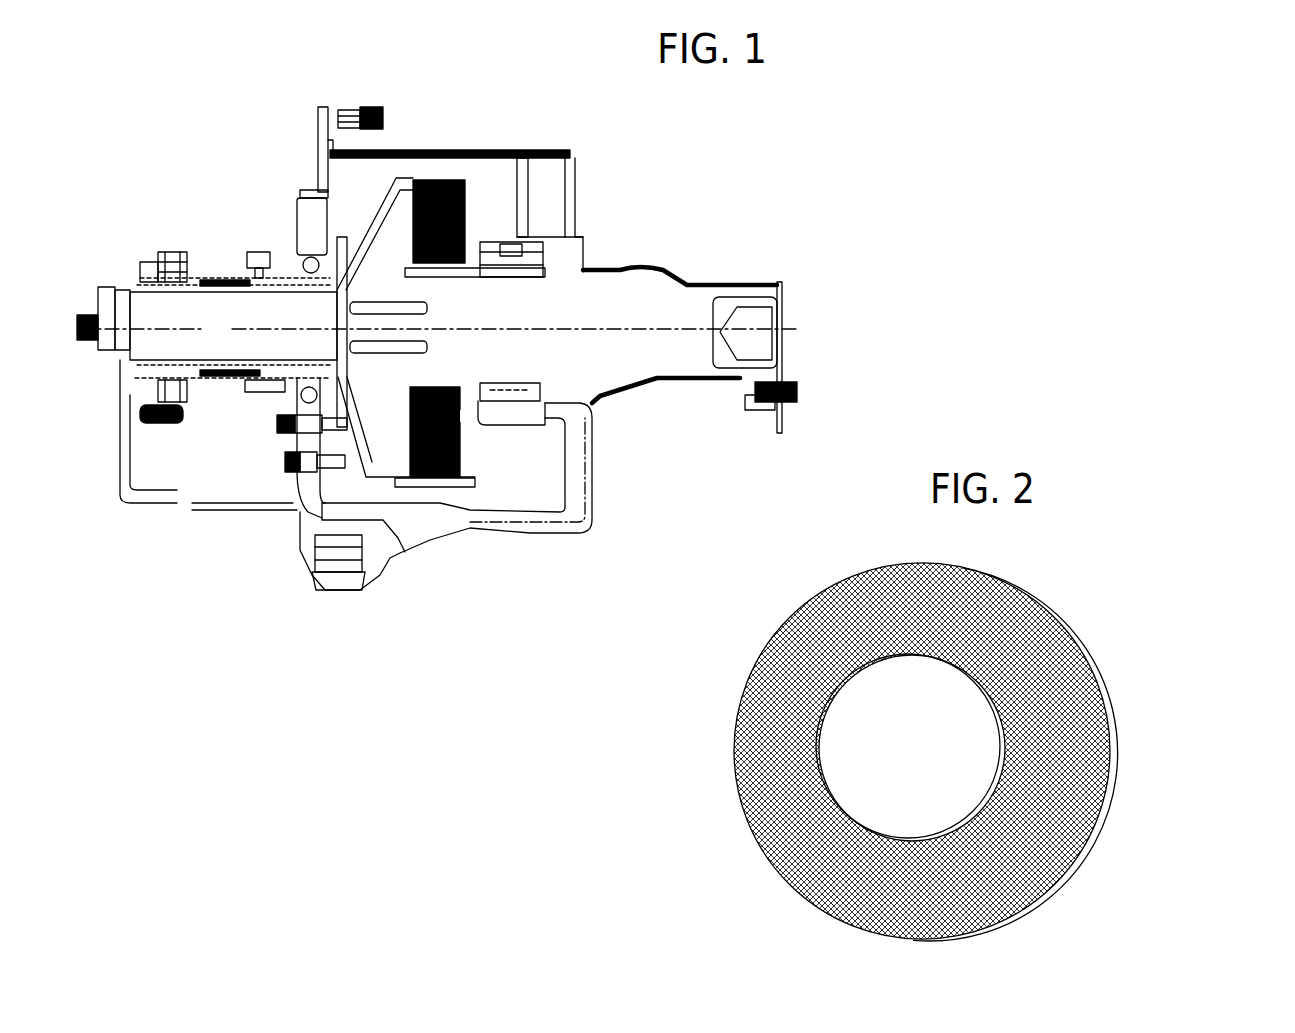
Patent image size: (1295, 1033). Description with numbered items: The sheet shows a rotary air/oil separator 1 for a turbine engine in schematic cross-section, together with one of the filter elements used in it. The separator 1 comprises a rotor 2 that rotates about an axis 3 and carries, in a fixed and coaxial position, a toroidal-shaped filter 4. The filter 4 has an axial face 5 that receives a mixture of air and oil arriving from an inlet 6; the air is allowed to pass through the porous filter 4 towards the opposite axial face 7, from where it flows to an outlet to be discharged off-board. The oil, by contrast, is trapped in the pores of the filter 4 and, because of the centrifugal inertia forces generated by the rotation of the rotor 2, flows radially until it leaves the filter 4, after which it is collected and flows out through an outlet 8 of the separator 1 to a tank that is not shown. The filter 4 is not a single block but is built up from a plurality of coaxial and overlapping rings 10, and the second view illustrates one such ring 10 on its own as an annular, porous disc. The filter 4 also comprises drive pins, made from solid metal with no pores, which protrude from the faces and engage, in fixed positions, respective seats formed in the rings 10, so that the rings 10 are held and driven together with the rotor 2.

In FIG. 1, the rotary air/oil separator 1 is at (240, 168).
In FIG. 1, the rotor 2 is at (326, 298).
In FIG. 1, the axis 3 is at (648, 330).
In FIG. 1, the toroidal-shaped filter 4 is at (472, 203).
In FIG. 1, the axial face 5 is at (482, 227).
In FIG. 1, the inlet 6 is at (291, 520).
In FIG. 1, the opposite axial face 7 is at (405, 218).
In FIG. 1, the outlet 8 is at (402, 562).
In FIG. 2, the ring 10 is at (1141, 690).